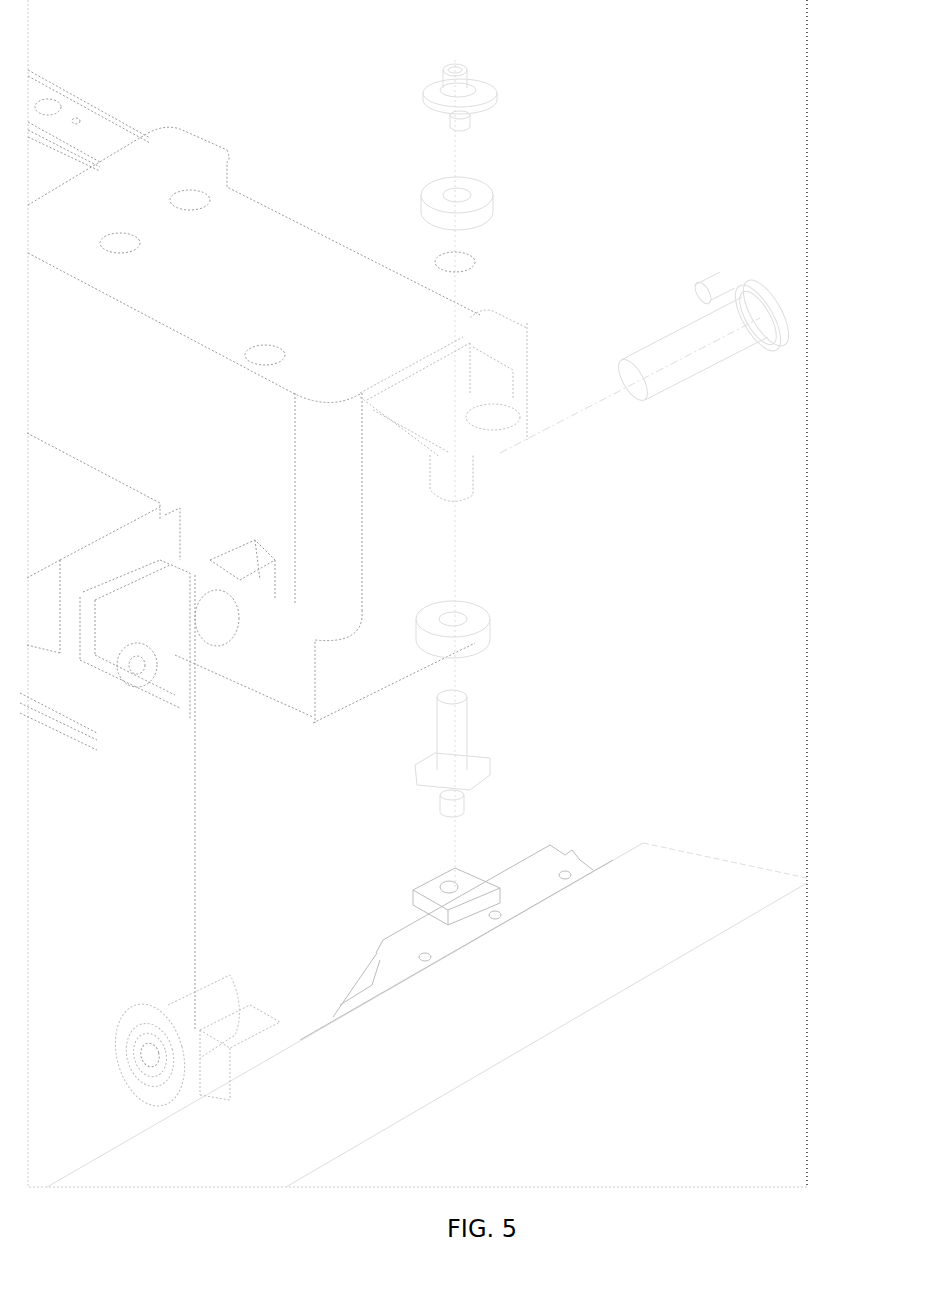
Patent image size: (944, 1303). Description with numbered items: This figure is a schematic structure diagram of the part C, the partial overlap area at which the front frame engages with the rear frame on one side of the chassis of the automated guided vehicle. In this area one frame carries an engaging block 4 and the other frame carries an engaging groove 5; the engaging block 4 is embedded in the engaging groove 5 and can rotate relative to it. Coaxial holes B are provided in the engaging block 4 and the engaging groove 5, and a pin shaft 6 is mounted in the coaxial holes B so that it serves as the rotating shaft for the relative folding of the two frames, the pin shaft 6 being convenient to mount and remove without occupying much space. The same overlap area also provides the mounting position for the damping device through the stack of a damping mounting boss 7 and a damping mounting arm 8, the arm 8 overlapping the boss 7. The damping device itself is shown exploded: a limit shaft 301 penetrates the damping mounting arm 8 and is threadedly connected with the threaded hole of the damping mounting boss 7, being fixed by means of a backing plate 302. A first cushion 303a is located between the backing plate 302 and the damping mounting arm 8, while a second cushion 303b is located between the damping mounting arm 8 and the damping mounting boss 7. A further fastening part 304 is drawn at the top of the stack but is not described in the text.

The engaging block 4 is at (193, 1003).
The engaging groove 5 is at (195, 678).
The pin shaft 6 is at (693, 347).
The damping mounting boss 7 is at (483, 397).
The damping mounting arm 8 is at (460, 868).
The limit shaft 301 is at (458, 735).
The backing plate 302 is at (477, 108).
The first cushion 303a is at (466, 191).
The second cushion 303b is at (481, 636).
The nut 304 is at (470, 90).
The coaxial holes B is at (138, 667).
The part C is at (807, 593).